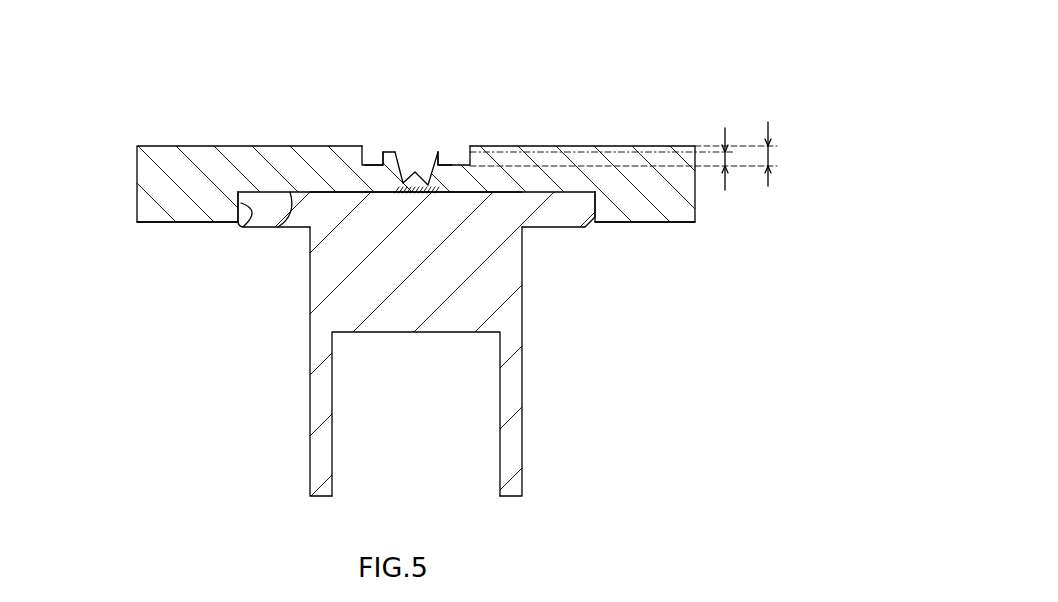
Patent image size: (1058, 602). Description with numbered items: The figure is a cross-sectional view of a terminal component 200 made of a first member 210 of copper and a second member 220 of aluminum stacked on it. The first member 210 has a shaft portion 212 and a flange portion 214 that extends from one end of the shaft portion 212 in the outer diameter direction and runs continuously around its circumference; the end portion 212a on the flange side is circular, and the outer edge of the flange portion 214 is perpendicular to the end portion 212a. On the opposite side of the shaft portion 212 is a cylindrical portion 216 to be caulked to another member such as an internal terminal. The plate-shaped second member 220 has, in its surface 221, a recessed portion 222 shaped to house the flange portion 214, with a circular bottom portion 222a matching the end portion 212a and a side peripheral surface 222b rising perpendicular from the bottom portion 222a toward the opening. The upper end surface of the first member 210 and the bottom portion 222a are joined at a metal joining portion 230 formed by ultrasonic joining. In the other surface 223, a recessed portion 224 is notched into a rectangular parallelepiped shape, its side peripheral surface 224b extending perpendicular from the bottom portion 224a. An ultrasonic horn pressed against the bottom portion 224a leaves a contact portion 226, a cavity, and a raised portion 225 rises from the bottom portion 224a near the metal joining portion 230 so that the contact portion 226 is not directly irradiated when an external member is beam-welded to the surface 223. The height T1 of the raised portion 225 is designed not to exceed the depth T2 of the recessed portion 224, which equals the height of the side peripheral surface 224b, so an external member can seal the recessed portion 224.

The terminal component 200 is at (667, 72).
The first member 210 is at (525, 326).
The shaft portion 212 is at (523, 293).
The end portion 212a is at (322, 192).
The flange portion 214 is at (573, 228).
The cylindrical portion 216 is at (524, 437).
The second member 220 is at (133, 190).
The surface 221 is at (160, 224).
The recessed portion 222 is at (536, 196).
The bottom portion 222a is at (286, 222).
The side peripheral surface 222b is at (245, 228).
The other surface 223 is at (172, 146).
The recessed portion 224 is at (366, 164).
The bottom portion 224a is at (378, 164).
The side peripheral surface 224b is at (462, 163).
The raised portion 225 is at (444, 163).
The contact portion 226 is at (428, 183).
The metal joining portion 230 is at (412, 193).
The height of the raised portion T1 is at (727, 160).
The height (depth) of the recessed portion T2 is at (771, 153).